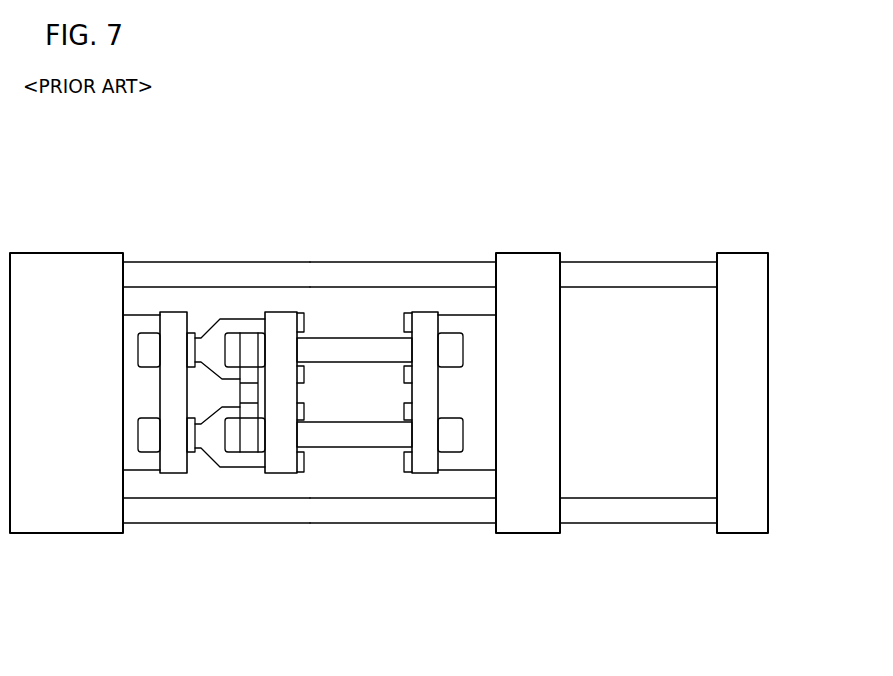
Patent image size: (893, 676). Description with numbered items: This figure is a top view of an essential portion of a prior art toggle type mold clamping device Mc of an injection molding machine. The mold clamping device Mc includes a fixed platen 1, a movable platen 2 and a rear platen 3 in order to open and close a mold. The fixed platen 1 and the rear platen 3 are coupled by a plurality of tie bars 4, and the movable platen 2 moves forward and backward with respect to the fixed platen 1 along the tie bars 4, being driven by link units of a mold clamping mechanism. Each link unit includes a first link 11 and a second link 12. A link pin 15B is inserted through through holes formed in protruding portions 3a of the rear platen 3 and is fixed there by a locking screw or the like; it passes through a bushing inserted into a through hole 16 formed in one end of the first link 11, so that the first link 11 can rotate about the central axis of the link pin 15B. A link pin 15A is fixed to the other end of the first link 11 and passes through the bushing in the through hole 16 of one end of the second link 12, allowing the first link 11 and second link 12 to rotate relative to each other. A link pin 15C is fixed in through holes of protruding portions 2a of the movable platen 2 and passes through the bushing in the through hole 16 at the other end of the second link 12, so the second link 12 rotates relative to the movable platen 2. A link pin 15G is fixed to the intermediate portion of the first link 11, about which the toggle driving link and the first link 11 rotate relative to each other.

The mold clamping device Mc is at (381, 158).
The fixed platen 1 is at (743, 253).
The movable platen 2 is at (522, 253).
The protruding portions of the movable platen 2a is at (460, 315).
The rear platen 3 is at (30, 253).
The protruding portions of the rear platen 3a is at (135, 314).
The tie bars 4 is at (637, 262).
The first link 11 is at (236, 318).
The second link 12 is at (352, 338).
The link pin 15A is at (289, 312).
The link pin 15B is at (178, 312).
The link pin 15C is at (425, 312).
The link pin 15G is at (259, 330).
The through hole 16 is at (423, 352).